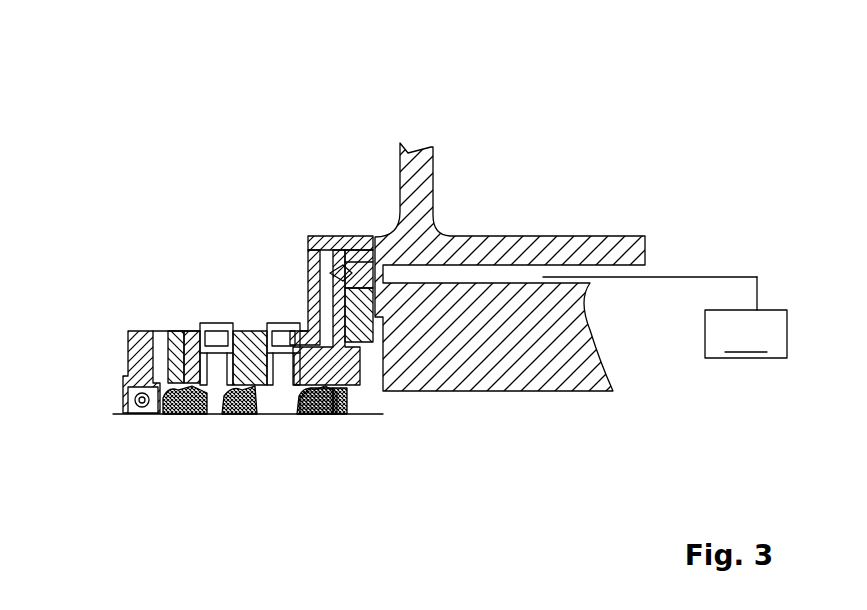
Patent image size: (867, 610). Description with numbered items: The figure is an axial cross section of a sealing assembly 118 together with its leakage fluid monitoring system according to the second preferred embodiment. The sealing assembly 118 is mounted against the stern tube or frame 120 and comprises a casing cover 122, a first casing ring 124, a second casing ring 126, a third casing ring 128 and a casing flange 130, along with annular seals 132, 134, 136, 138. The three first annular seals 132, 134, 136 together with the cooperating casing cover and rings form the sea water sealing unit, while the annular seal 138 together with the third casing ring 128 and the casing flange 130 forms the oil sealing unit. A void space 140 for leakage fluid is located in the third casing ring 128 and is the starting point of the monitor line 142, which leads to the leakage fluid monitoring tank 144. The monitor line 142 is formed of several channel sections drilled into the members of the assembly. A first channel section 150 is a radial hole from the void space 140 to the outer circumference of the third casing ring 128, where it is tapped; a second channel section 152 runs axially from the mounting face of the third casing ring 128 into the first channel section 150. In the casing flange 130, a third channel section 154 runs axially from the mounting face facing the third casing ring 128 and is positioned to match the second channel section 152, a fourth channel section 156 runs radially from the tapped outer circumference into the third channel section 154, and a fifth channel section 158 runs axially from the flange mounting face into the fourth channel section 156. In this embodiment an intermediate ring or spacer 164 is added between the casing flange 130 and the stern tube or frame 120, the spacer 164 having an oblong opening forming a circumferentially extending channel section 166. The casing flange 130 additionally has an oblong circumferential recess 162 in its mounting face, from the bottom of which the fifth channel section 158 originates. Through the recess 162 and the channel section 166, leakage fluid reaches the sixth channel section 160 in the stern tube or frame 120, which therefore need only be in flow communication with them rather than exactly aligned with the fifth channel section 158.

The sealing assembly 118 is at (98, 303).
The stern tube or frame 120 is at (450, 237).
The casing cover 122 is at (138, 328).
The first casing ring 124 is at (165, 328).
The second casing ring 126 is at (188, 330).
The third casing ring 128 is at (240, 328).
The casing flange 130 is at (310, 303).
The annular seal 132 is at (137, 406).
The annular seal 134 is at (176, 404).
The annular seal 136 is at (237, 404).
The annular seal 138 is at (306, 404).
The void space 140 is at (270, 416).
The monitor line 142 is at (607, 277).
The leakage fluid monitoring tank 144 is at (746, 334).
The first channel section 150 is at (240, 328).
The second channel section 152 is at (327, 391).
The third channel section 154 is at (328, 381).
The fourth channel section 156 is at (308, 245).
The fifth channel section 158 is at (358, 315).
The sixth channel section 160 is at (487, 277).
The oblong circumferential recess 162 is at (338, 235).
The intermediate ring or spacer 164 is at (363, 235).
The circumferentially extending channel section 166 is at (397, 222).